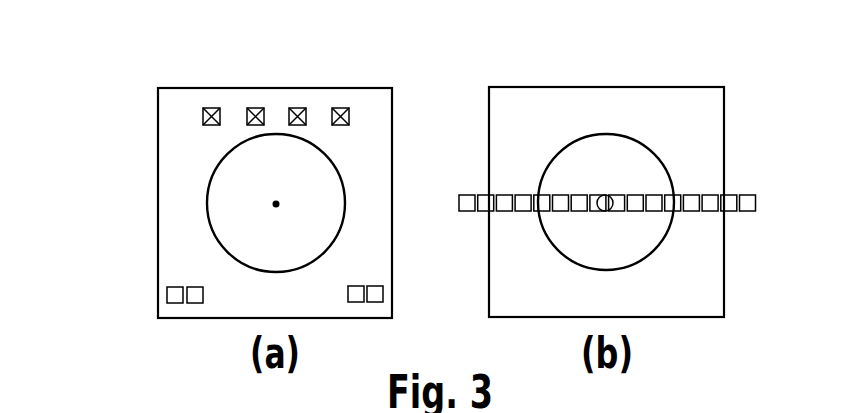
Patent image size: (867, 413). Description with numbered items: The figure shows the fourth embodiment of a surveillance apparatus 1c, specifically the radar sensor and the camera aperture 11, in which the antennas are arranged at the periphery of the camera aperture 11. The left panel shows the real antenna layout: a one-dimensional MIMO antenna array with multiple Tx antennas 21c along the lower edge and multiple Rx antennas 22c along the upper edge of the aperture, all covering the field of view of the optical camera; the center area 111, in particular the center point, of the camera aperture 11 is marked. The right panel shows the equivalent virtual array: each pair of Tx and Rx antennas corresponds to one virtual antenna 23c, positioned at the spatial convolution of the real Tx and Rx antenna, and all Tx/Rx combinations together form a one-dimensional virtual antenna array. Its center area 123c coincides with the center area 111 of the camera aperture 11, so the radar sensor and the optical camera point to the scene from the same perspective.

The surveillance apparatus 1c is at (131, 95).
The camera aperture 11 is at (208, 206).
The center area of the camera aperture 111 is at (276, 204).
The Tx antennas 21c is at (167, 294).
The Rx antennas 22c is at (343, 108).
The virtual antenna 23c is at (745, 212).
The center area of the virtual antenna array 123c is at (612, 200).